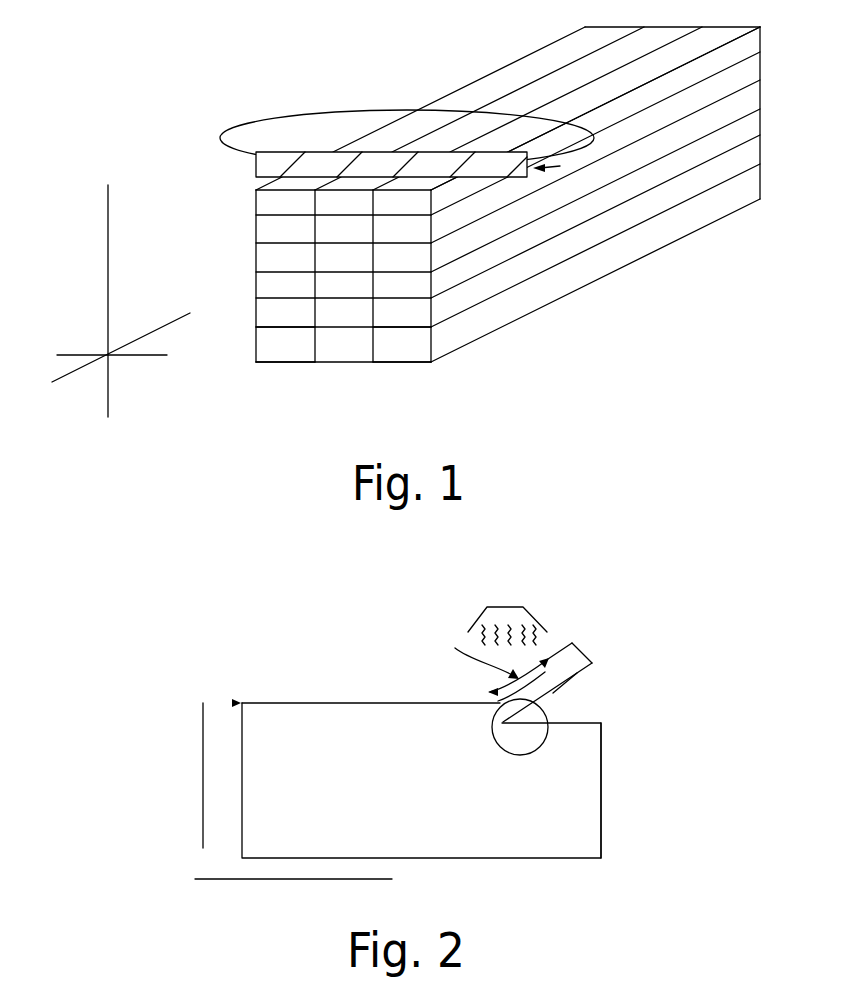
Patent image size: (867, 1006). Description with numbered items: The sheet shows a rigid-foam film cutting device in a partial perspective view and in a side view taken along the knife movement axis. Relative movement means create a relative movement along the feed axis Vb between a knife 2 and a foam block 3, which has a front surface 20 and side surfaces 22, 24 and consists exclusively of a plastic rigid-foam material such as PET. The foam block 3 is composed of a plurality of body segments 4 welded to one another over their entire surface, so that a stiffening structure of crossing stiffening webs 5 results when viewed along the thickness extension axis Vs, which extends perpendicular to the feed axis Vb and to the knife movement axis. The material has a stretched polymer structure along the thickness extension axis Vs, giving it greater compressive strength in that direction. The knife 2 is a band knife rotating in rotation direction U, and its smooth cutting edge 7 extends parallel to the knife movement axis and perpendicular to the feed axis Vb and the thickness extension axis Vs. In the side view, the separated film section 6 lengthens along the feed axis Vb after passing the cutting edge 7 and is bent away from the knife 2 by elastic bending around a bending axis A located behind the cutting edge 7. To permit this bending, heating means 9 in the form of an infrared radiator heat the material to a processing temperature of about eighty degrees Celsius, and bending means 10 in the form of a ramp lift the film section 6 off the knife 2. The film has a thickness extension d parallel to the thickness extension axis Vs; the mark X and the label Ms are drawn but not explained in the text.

In FIG. 1, the knife 2 is at (318, 150).
In FIG. 1, the foam block 3 is at (665, 234).
In FIG. 1, the body segments 4 is at (403, 352).
In FIG. 1, the stiffening webs 5 is at (322, 363).
In FIG. 1, the cutting edge 7 is at (465, 180).
In FIG. 2, the cutting edge 7 is at (497, 738).
In FIG. 1, the front surface 20 is at (343, 259).
In FIG. 2, the front surface 20 is at (383, 703).
In FIG. 1, the side surface 22 is at (550, 72).
In FIG. 2, the side surface 22 is at (603, 790).
In FIG. 1, the side surface 24 is at (672, 155).
In FIG. 2, the side surface 24 is at (421, 780).
In FIG. 2, the separated film section 6 is at (578, 644).
In FIG. 2, the heating means 9 is at (483, 616).
In FIG. 2, the bending means 10 is at (582, 683).
In FIG. 1, the rotation direction U is at (262, 117).
In FIG. 2, the bending axis A is at (475, 650).
In FIG. 2, the nip point X is at (550, 704).
In FIG. 2, the thickness extension d is at (230, 712).
In FIG. 1, the feed axis Vb is at (112, 297).
In FIG. 2, the feed axis Vb is at (258, 882).
In FIG. 1, the thickness extension axis Vs is at (158, 324).
In FIG. 2, the thickness extension axis Vs is at (202, 770).
In FIG. 1, the strand mass flow Ms is at (142, 357).